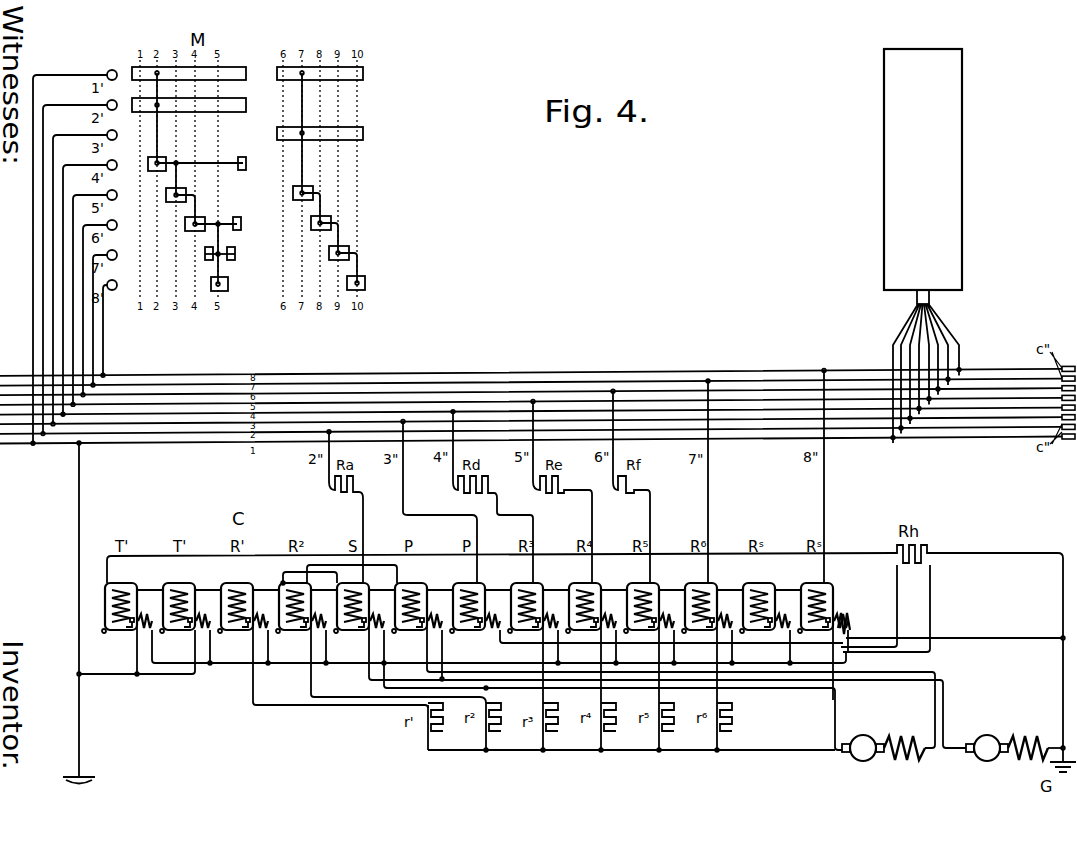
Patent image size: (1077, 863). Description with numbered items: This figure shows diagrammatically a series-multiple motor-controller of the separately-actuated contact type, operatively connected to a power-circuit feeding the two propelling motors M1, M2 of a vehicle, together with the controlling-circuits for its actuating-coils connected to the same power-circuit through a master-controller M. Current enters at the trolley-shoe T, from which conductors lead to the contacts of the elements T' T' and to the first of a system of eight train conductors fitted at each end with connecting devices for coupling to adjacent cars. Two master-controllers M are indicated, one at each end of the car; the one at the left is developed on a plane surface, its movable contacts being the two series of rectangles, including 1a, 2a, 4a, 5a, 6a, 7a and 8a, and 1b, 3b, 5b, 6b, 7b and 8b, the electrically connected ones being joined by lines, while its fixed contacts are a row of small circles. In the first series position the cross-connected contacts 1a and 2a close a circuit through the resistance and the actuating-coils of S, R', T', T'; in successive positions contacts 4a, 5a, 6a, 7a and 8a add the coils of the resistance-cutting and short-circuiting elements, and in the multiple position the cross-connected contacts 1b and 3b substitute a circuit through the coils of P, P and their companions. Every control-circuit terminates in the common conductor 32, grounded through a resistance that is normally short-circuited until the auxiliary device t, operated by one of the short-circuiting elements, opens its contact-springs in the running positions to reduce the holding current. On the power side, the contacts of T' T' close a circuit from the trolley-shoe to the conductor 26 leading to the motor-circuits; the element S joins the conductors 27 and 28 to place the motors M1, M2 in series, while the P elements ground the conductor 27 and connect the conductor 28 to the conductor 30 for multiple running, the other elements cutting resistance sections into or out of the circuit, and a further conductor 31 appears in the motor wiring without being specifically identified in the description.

The movable contact 1a is at (246, 80).
The movable contact 2a is at (246, 112).
The movable contact 4a is at (150, 171).
The movable contact 5a is at (168, 202).
The movable contact 6a is at (187, 231).
The movable contact 7a is at (205, 262).
The movable contact 8a is at (228, 284).
The movable contact 1b is at (363, 80).
The movable contact 3b is at (363, 140).
The movable contact 5b is at (313, 192).
The movable contact 6b is at (331, 222).
The movable contact 7b is at (349, 252).
The movable contact 8b is at (365, 283).
The master-controller M is at (923, 233).
The trolley-shoe T is at (85, 621).
The conductor 26 is at (232, 663).
The conductor 27 is at (890, 685).
The conductor 28 is at (890, 676).
The conductor 30 is at (838, 716).
The conductor 31 is at (775, 700).
The common conductor 32 is at (848, 553).
The auxiliary device t is at (851, 630).
The propelling motor M1 is at (883, 760).
The propelling motor M2 is at (1014, 760).